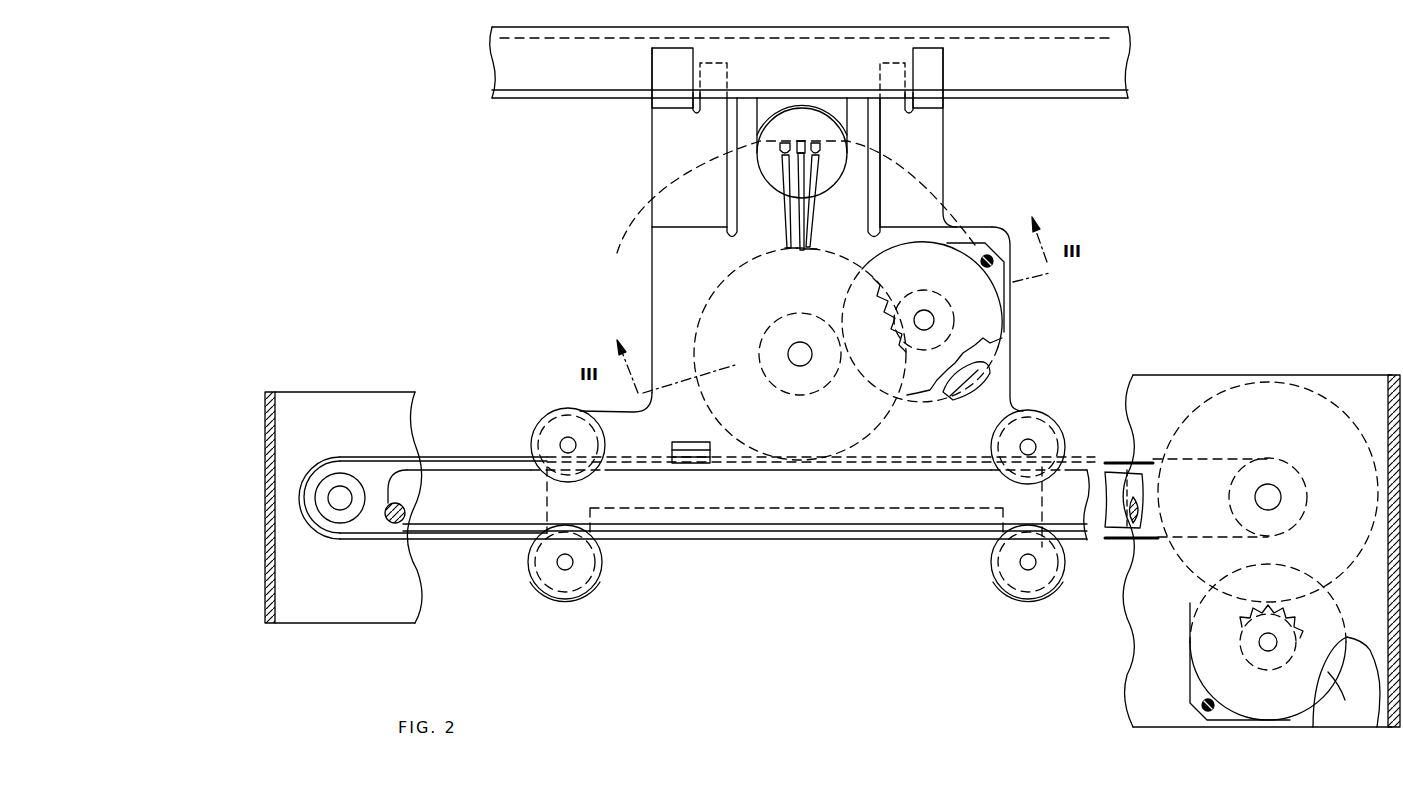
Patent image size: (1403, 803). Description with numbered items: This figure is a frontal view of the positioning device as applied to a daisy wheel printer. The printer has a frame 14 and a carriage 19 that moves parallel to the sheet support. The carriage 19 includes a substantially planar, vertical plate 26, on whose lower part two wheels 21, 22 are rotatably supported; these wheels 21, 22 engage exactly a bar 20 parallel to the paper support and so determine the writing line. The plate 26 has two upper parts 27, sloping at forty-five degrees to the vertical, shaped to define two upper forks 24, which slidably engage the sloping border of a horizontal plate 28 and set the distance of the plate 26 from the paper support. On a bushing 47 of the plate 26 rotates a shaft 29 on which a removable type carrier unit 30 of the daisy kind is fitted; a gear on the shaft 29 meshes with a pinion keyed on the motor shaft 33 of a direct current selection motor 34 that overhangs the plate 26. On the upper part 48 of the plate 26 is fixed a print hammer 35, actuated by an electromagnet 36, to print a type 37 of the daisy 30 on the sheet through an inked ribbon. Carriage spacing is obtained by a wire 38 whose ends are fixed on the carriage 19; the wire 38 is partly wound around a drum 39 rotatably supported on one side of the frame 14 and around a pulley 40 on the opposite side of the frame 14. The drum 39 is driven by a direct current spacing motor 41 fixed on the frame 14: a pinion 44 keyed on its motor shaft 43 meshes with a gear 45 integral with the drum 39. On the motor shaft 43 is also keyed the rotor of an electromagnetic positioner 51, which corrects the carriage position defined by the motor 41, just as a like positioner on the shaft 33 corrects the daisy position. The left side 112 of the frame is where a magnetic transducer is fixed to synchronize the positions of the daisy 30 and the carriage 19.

The frame 14 is at (283, 466).
The carriage 19 is at (552, 227).
The bar 20 is at (473, 513).
The wheel 21 is at (551, 410).
The wheel 22 is at (599, 577).
The upper fork 24 is at (693, 70).
The plate 26 is at (1008, 340).
The upper part 27 is at (662, 153).
The horizontal plate 28 is at (1120, 36).
The shaft 29 is at (793, 358).
The type carrier unit 30 is at (614, 255).
The motor shaft 33 is at (928, 320).
The selection motor 34 is at (970, 400).
The print hammer 35 is at (802, 140).
The electromagnet 36 is at (833, 173).
The type 37 is at (818, 150).
The wire 38 is at (432, 458).
The drum 39 is at (1283, 460).
The pulley 40 is at (352, 470).
The spacing motor 41 is at (1330, 673).
The motor shaft 43 is at (1262, 646).
The pinion 44 is at (1243, 633).
The gear 45 is at (1180, 413).
The bushing 47 is at (832, 378).
The upper part 48 is at (748, 182).
The electromagnetic positioner 51 is at (1205, 617).
The left side 112 is at (1390, 428).